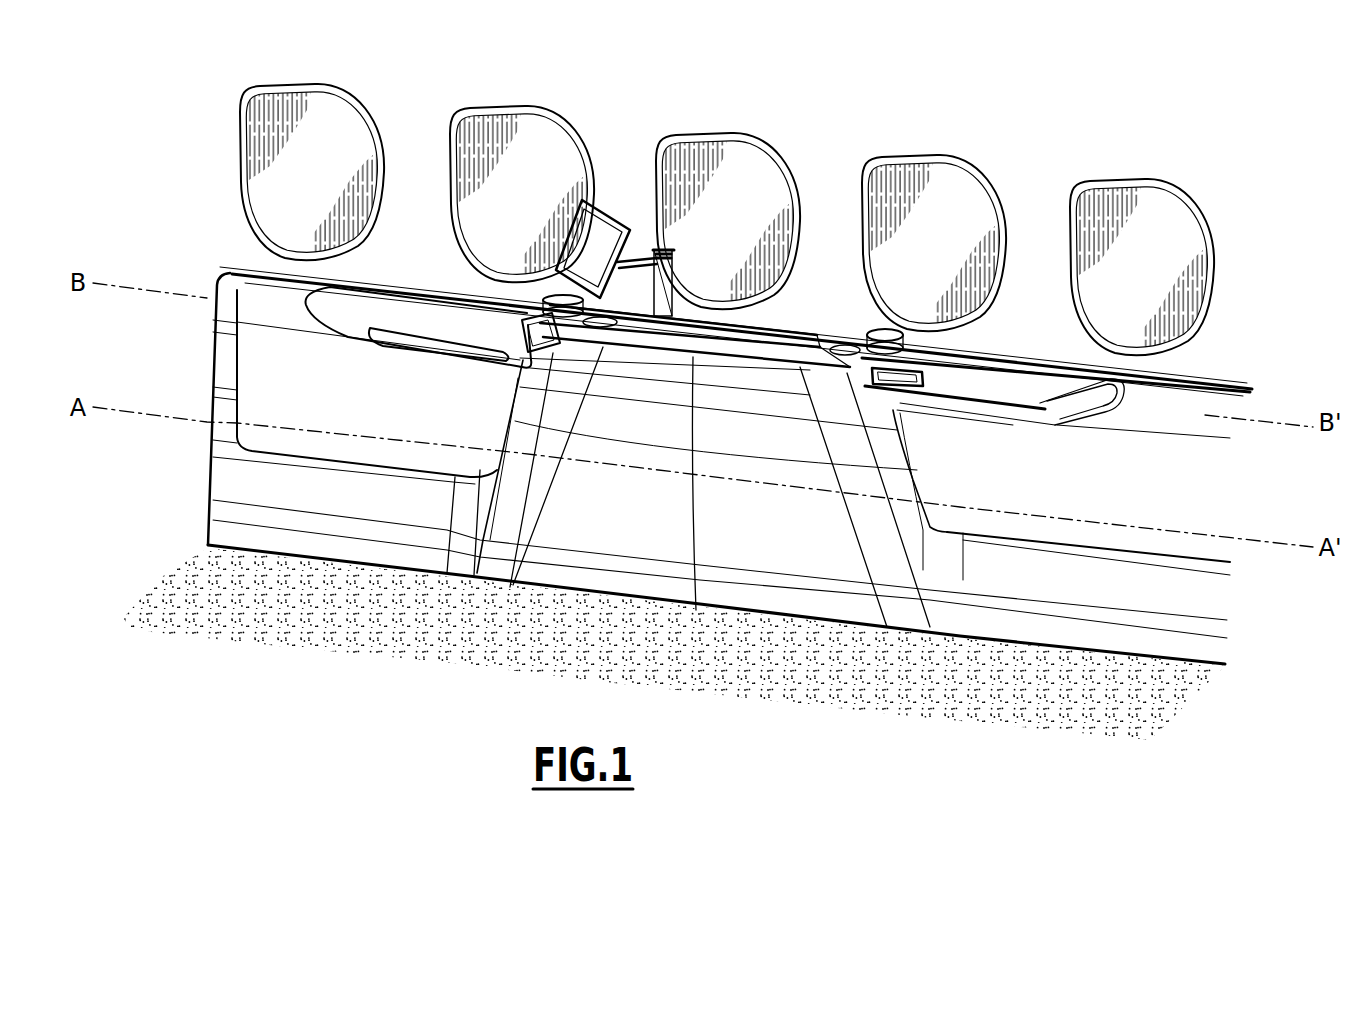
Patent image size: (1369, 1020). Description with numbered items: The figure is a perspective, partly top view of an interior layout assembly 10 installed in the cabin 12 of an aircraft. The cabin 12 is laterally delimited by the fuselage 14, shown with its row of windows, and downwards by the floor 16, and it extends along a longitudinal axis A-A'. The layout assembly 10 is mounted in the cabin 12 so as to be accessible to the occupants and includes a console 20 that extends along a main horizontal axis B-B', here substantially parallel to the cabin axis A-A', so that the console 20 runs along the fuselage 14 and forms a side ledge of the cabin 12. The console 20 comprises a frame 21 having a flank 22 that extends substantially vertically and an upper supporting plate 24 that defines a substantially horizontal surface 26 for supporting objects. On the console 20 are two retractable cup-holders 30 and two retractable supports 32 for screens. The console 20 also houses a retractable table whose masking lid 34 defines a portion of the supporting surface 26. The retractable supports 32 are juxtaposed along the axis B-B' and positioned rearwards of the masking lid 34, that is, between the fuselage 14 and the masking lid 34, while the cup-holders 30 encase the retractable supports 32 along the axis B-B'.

The interior layout assembly 10 is at (268, 651).
The cabin 12 is at (1114, 527).
The fuselage 14 is at (1032, 200).
The floor 16 is at (543, 637).
The console 20 is at (204, 366).
The frame 21 is at (1013, 632).
The flank 22 is at (220, 480).
The upper supporting plate 24 is at (913, 353).
The supporting surface 26 is at (830, 333).
The retractable cup-holder 30 is at (541, 290).
The retractable support for screens 32 is at (776, 320).
The masking lid 34 is at (677, 342).